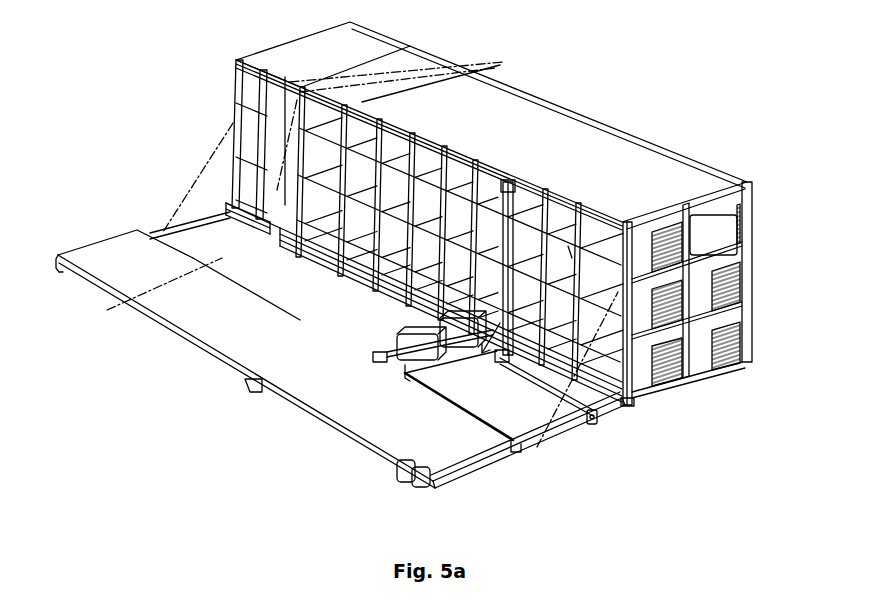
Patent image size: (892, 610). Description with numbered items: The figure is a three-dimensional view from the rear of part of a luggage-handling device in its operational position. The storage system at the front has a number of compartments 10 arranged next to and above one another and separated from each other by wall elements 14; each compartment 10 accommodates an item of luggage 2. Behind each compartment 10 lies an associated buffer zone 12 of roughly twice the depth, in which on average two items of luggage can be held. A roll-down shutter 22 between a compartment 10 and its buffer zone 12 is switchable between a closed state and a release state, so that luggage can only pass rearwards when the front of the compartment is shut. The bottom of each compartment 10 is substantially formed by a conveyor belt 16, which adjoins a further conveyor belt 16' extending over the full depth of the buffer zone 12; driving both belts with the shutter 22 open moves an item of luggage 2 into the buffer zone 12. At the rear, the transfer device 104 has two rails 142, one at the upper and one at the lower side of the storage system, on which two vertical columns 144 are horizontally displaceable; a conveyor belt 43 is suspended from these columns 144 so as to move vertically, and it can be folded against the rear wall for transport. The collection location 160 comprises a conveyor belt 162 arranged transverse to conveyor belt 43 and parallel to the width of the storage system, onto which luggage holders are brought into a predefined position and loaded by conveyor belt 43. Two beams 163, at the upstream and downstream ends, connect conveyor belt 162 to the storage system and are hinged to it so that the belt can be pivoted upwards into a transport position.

The compartment 10 is at (732, 272).
The buffer zone 12 is at (247, 126).
The wall element 14 is at (423, 153).
The rail 142 is at (260, 72).
The vertical column 144 is at (512, 183).
The conveyor belt 16' is at (592, 311).
The roll-down shutter 22 is at (662, 232).
The conveyor belt 16 is at (743, 300).
The item of luggage 2 is at (428, 350).
The conveyor belt 43 is at (390, 348).
The transfer device 104 is at (380, 324).
The conveyor belt 162 is at (325, 377).
The beam 163 is at (163, 233).
The collection location 160 is at (492, 491).